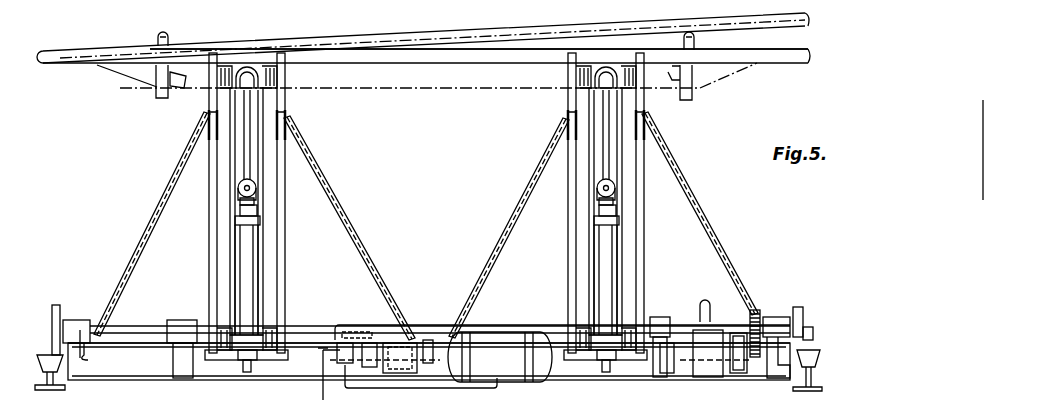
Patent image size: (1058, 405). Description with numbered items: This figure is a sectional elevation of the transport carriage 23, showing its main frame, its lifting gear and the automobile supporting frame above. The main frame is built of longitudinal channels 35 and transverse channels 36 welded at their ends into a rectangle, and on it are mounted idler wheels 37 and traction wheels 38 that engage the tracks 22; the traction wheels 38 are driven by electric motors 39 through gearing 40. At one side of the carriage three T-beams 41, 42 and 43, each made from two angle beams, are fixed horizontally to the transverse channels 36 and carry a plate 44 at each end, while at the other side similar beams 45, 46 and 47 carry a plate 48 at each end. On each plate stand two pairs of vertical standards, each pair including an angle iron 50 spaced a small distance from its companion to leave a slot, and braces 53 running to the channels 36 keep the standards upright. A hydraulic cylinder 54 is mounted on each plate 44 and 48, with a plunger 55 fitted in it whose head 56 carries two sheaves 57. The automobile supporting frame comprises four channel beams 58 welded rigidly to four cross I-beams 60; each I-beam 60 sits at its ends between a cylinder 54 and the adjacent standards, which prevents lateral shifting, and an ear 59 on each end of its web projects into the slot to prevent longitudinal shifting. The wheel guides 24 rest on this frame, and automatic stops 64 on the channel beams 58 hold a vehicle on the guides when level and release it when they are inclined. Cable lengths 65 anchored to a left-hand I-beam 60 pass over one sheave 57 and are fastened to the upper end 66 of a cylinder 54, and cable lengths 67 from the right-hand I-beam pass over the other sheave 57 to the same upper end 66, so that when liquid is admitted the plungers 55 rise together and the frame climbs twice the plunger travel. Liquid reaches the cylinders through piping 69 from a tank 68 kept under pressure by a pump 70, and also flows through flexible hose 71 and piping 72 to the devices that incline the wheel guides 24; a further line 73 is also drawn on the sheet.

The tracks 22 is at (40, 378).
The transport carriage 23 is at (112, 256).
The wheel guides 24 is at (383, 33).
The longitudinal channels 35 is at (75, 378).
The transverse channels 36 is at (142, 380).
The idler wheels 37 is at (52, 318).
The traction wheels 38 is at (806, 322).
The electric motors 39 is at (755, 310).
The gearing 40 is at (787, 306).
The T-beam 41 is at (222, 362).
The T-beam 42 is at (245, 360).
The T-beam 43 is at (270, 362).
The plate 44 is at (258, 362).
The beam 45 is at (660, 375).
The beam 46 is at (735, 375).
The beam 47 is at (700, 378).
The plate 48 is at (655, 378).
The angle iron 50 is at (286, 160).
The braces 53 is at (152, 212).
The hydraulic cylinders 54 is at (250, 288).
The plungers 55 is at (257, 209).
The heads 56 is at (240, 205).
The sheaves 57 is at (252, 68).
The channel beams 58 is at (424, 78).
The ear 59 is at (208, 78).
The cross I-beams 60 is at (210, 112).
The automatic stops 64 is at (159, 37).
The cable lengths 65 is at (233, 282).
The upper end of cylinder 66 is at (260, 222).
The cable lengths 67 is at (262, 257).
The tank 68 is at (487, 372).
The piping 69 is at (336, 338).
The pump 70 is at (380, 372).
The flexible hose 71 is at (365, 370).
The piping 72 is at (424, 388).
The drain pipe 73 is at (323, 380).